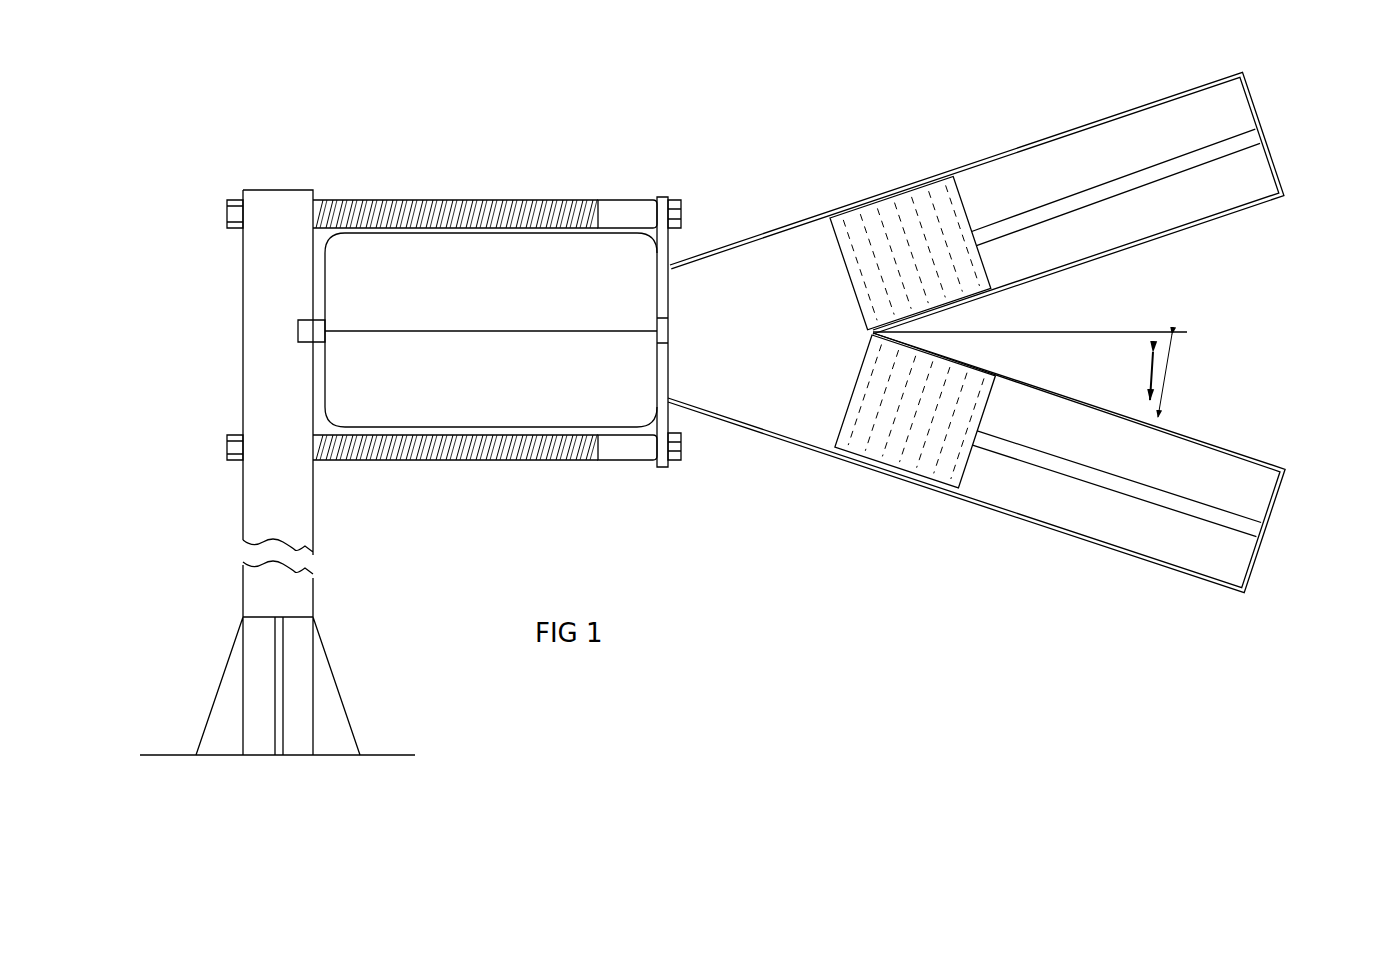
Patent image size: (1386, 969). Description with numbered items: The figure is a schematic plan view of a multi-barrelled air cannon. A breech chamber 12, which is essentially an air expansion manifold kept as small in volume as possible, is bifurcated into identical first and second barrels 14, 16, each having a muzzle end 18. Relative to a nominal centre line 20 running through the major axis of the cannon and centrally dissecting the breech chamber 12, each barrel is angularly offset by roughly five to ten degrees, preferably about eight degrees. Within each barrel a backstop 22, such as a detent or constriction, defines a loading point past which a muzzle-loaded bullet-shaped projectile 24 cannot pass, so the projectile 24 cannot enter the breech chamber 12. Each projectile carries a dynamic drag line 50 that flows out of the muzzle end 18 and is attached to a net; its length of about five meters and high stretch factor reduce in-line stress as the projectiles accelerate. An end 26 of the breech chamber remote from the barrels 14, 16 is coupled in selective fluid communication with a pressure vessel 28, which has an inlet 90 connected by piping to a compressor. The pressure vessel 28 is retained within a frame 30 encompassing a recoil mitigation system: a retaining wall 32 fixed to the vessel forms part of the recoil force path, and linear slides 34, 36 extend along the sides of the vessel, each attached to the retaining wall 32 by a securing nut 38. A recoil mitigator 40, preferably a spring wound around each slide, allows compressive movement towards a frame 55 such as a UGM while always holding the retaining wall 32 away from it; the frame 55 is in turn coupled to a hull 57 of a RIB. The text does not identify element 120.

The breech chamber 12 is at (777, 328).
The first barrel 14 is at (1058, 170).
The second barrel 16 is at (1062, 513).
The muzzle end 18 is at (1258, 112).
The nominal centre line 20 is at (1165, 375).
The backstop 22 is at (829, 219).
The bullet-shaped projectile 24 is at (880, 213).
The end of the breech chamber 26 is at (680, 360).
The pressure vessel 28 is at (500, 303).
The frame 30 is at (663, 197).
The retaining wall 32 is at (645, 463).
The linear slide 34 is at (497, 450).
The linear slide 36 is at (440, 210).
The securing nut 38 is at (683, 213).
The recoil mitigator 40 is at (375, 205).
The dynamic drag line 50 is at (1120, 185).
The frame 55 is at (300, 521).
The hull 57 is at (375, 770).
The inlet 90 is at (262, 200).
The hinge bracket 120 is at (662, 330).